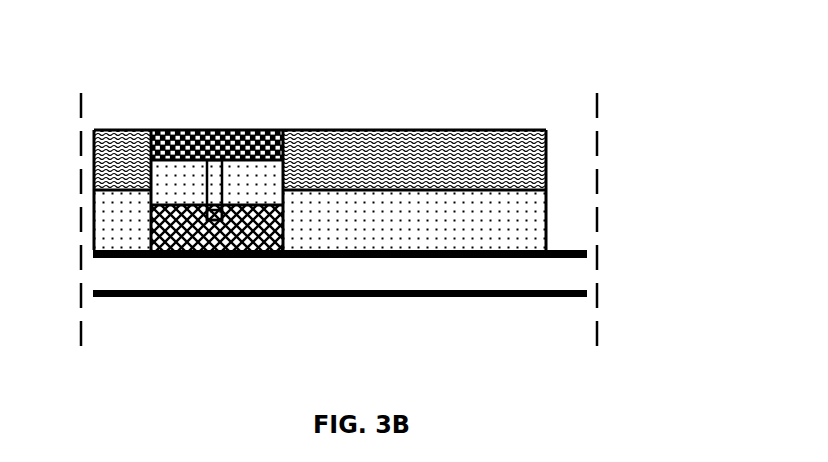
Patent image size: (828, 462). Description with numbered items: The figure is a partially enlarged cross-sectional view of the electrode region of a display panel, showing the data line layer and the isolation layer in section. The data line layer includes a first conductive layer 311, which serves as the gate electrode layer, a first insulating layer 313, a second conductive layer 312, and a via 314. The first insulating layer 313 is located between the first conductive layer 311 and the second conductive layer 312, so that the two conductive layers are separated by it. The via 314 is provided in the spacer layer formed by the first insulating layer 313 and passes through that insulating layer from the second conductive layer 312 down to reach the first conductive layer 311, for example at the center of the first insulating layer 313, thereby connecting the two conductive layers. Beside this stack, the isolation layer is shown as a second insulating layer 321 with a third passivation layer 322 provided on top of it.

The first conductive layer 311 is at (225, 240).
The second conductive layer 312 is at (211, 158).
The first insulating layer 313 is at (247, 175).
The via 314 is at (211, 222).
The second insulating layer 321 is at (402, 228).
The third passivation layer 322 is at (400, 150).